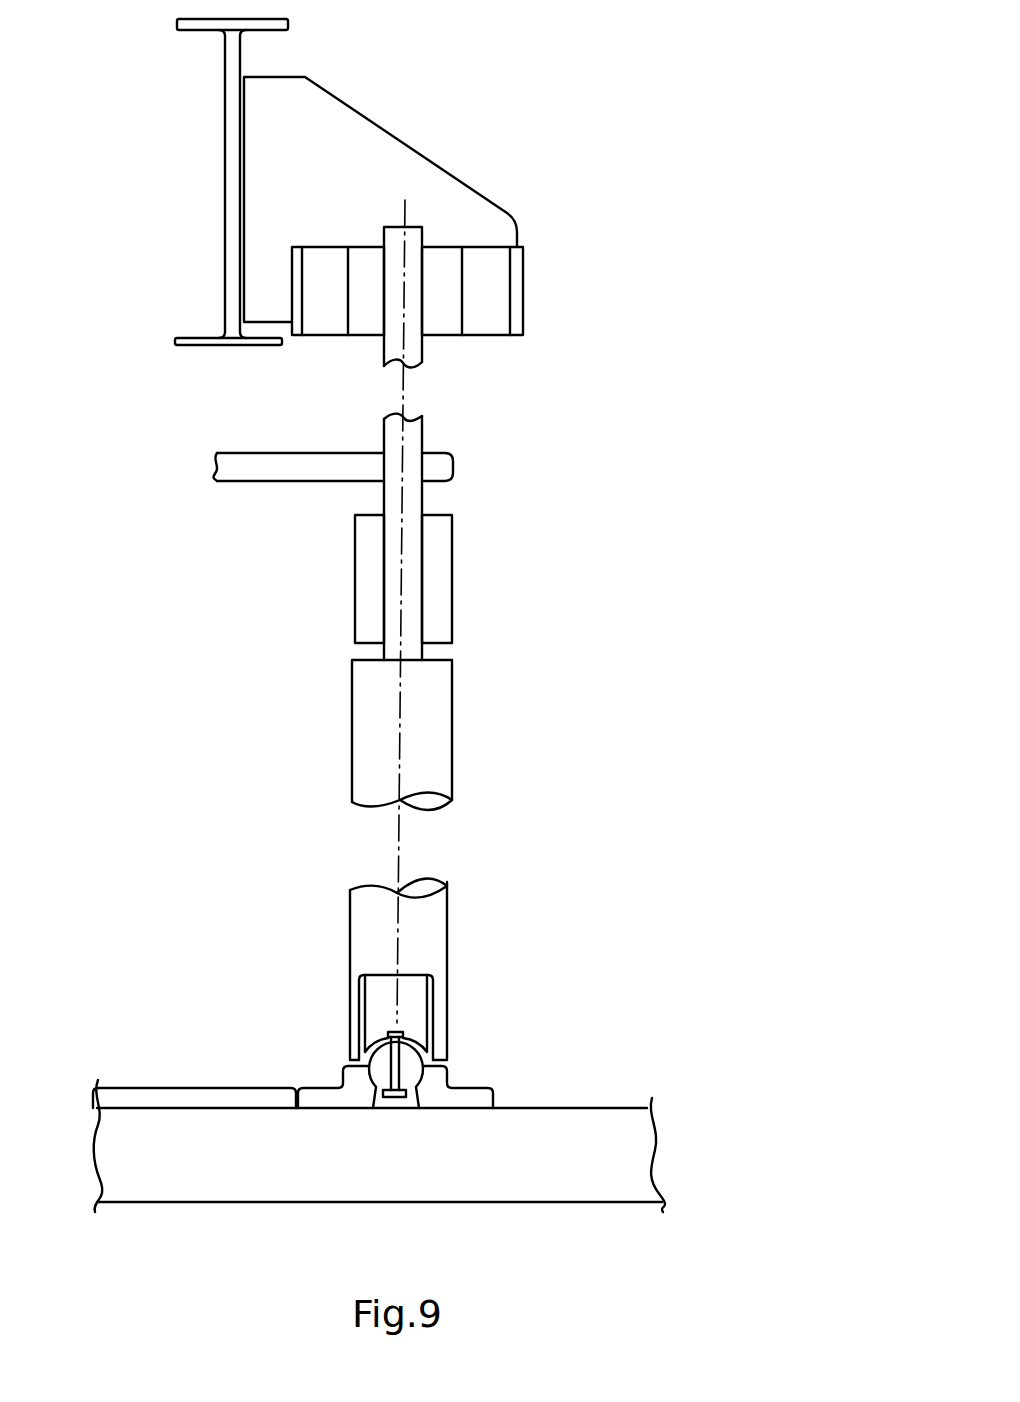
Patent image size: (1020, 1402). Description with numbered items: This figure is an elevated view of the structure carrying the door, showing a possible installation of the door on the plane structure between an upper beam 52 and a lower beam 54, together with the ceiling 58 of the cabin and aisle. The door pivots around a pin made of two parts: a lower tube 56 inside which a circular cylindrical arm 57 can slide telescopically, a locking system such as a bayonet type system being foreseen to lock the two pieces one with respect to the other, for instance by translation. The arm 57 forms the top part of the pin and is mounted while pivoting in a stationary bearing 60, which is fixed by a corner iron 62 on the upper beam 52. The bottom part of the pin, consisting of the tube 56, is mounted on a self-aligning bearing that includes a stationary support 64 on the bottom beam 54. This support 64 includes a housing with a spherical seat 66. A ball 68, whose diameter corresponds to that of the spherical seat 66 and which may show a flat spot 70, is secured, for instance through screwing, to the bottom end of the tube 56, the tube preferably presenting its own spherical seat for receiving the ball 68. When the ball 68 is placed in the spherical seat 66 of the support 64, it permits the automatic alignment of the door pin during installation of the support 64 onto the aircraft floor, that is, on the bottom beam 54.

The upper beam 52 is at (232, 188).
The lower beam 54 is at (593, 1192).
The lower tube 56 is at (410, 575).
The circular cylindrical arm 57 is at (428, 715).
The ceiling 58 is at (260, 468).
The stationary bearing 60 is at (440, 318).
The corner iron 62 is at (357, 145).
The stationary support 64 is at (473, 1097).
The spherical seat 66 is at (407, 1050).
The ball 68 is at (377, 1073).
The flat spot 70 is at (408, 1092).